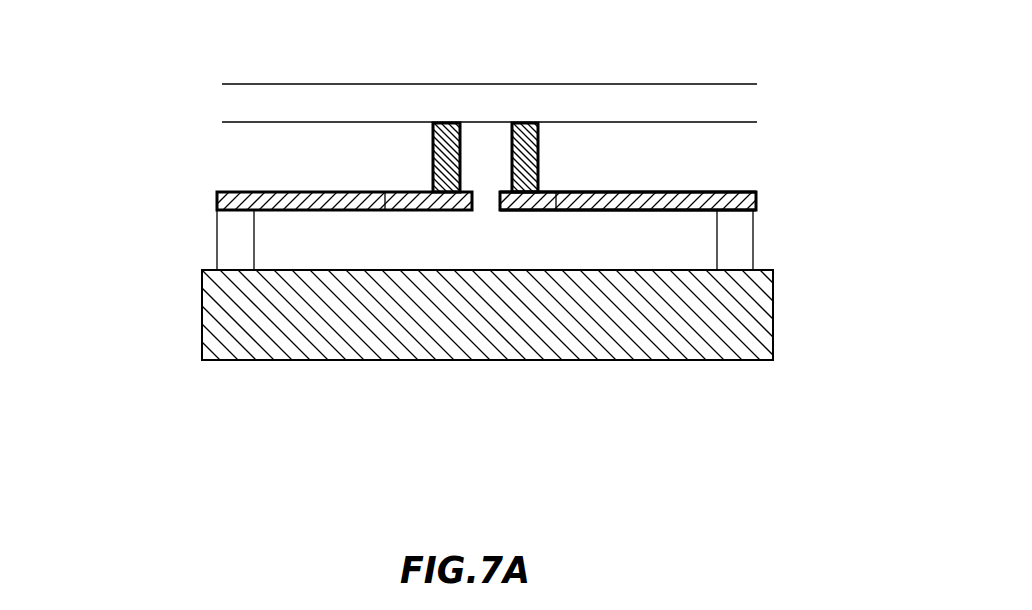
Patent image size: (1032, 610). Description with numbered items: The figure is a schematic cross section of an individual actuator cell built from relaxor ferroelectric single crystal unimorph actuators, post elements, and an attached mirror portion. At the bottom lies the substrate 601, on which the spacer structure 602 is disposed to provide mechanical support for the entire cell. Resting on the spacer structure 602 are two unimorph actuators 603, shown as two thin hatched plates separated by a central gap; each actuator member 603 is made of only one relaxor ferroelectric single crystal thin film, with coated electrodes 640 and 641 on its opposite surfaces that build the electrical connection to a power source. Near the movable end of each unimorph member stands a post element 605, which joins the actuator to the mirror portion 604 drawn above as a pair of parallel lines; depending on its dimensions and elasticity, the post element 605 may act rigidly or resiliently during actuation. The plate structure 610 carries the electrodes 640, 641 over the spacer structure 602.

The substrate 601 is at (243, 308).
The spacer structure 602 is at (235, 230).
The unimorph actuator 603 is at (556, 196).
The mirror portion 604 is at (403, 95).
The post element 605 is at (443, 160).
The diaphragm plate 610 is at (652, 197).
The electrode 640 is at (745, 191).
The electrode 641 is at (755, 212).